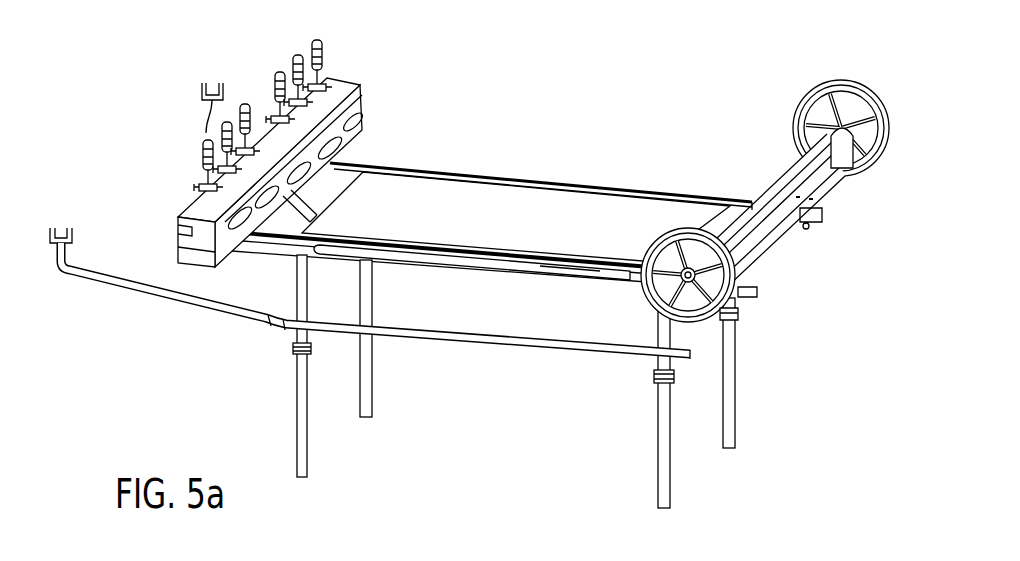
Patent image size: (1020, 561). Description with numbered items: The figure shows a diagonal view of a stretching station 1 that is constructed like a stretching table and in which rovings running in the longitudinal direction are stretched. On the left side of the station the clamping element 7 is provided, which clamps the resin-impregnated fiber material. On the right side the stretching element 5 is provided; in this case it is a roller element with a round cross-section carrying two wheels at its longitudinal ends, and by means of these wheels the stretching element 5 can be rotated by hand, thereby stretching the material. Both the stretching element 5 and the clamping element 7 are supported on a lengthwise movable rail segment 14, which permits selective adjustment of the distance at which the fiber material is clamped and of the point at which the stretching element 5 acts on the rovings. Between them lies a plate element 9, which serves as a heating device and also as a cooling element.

The stretching station 1 is at (507, 76).
The stretching element 5 is at (868, 83).
The clamping element 7 is at (382, 78).
The plate element 9 is at (433, 233).
The rail segment 14 is at (536, 268).